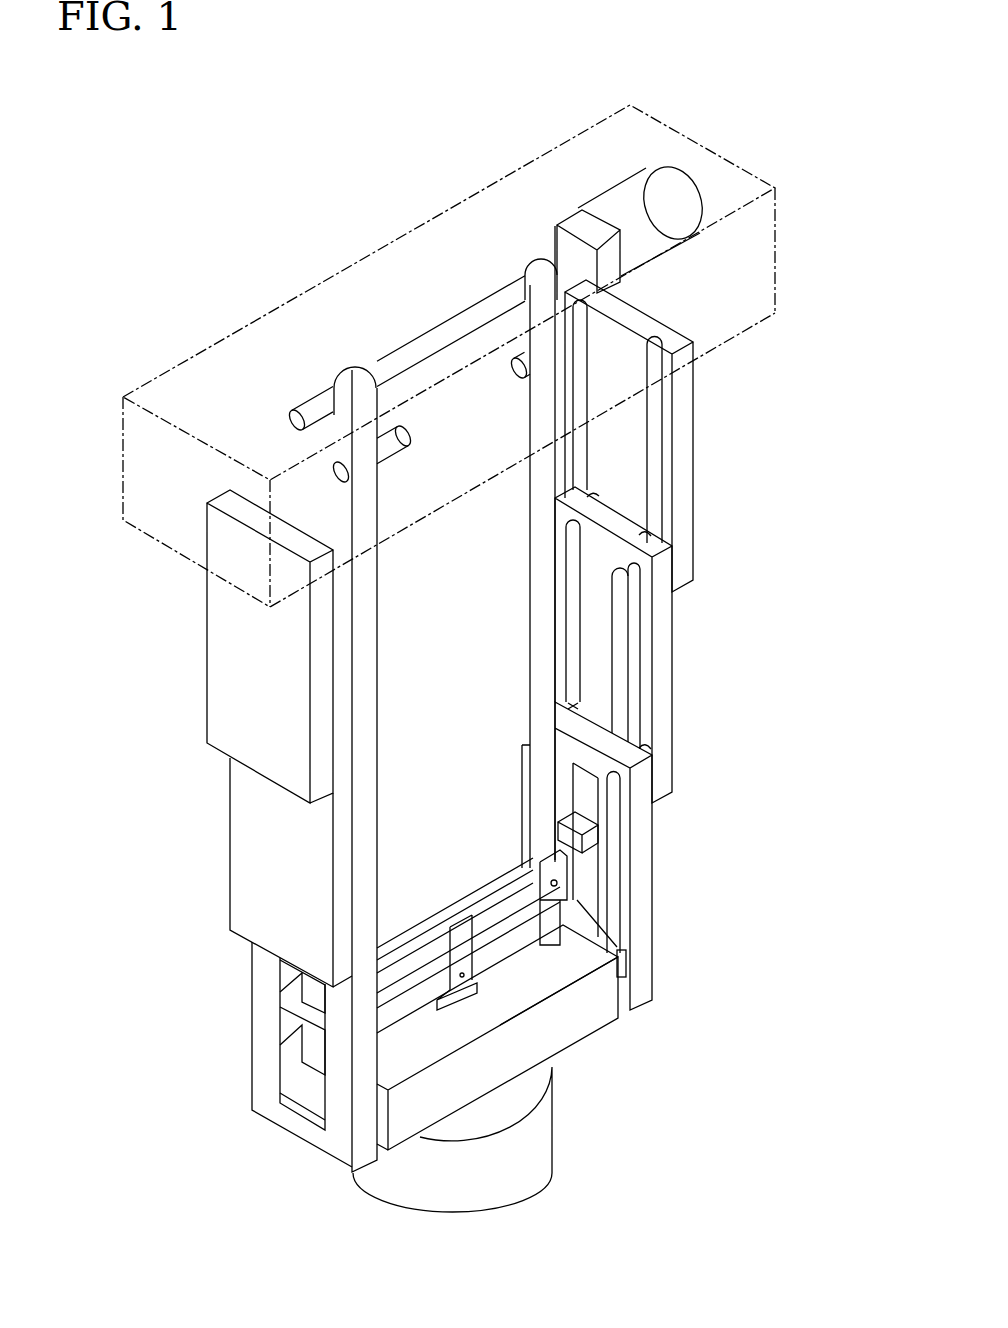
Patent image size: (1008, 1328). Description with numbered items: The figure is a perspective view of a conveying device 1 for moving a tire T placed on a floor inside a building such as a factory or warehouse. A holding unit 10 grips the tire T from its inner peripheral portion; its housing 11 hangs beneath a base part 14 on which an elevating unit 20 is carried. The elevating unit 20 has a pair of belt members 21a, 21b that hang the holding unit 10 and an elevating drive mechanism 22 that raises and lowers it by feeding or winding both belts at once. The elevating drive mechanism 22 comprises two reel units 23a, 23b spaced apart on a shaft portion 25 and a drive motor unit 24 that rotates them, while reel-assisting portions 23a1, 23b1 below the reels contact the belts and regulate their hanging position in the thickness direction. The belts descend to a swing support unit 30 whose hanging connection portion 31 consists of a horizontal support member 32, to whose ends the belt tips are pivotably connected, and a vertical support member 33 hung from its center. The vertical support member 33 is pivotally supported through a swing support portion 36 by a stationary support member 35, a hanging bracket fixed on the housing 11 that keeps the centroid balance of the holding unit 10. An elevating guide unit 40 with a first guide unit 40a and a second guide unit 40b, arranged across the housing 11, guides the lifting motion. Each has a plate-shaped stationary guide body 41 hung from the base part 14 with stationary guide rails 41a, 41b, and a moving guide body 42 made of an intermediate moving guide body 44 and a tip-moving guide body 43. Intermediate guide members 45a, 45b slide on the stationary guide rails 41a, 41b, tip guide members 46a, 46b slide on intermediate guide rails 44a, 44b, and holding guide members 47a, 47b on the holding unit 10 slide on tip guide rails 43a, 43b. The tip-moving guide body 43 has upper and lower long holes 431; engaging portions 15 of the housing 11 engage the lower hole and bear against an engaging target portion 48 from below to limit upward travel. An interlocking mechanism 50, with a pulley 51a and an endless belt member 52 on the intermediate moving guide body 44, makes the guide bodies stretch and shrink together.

The conveying device 1 is at (233, 200).
The holding unit 10 is at (619, 1024).
The housing 11 is at (575, 1020).
The base part 14 is at (762, 258).
The engaging portion 15 is at (592, 918).
The elevating unit 20 is at (374, 228).
The belt member 21a is at (366, 576).
The belt member 21b is at (543, 503).
The elevating drive mechanism 22 is at (502, 196).
The reel unit 23a is at (330, 385).
The reel-assisting portion 23a1 is at (338, 470).
The reel unit 23b is at (528, 290).
The reel-assisting portion 23b1 is at (518, 372).
The drive motor unit 24 is at (628, 200).
The shaft portion 25 is at (422, 345).
The swing support unit 30 is at (460, 812).
The hanging connection portion 31 is at (480, 857).
The horizontal support member 32 is at (458, 936).
The vertical support member 33 is at (408, 932).
The stationary support member 35 is at (530, 1125).
The swing support portion 36 is at (418, 1000).
The elevating guide unit 40 is at (471, 735).
The first guide unit 40a is at (712, 585).
The second guide unit 40b is at (163, 737).
The stationary guide body 41 is at (690, 503).
The stationary guide rail 41a is at (590, 398).
The stationary guide rail 41b is at (652, 445).
The moving guide body 42 is at (463, 838).
The tip-moving guide body 43 is at (641, 875).
The tip guide rail 43a is at (524, 748).
The tip guide rail 43b is at (622, 806).
The rectangular long hole 431 is at (295, 977).
The intermediate moving guide body 44 is at (665, 690).
The intermediate guide rail 44a is at (558, 622).
The intermediate guide rail 44b is at (580, 592).
The intermediate guide member 45a is at (595, 497).
The intermediate guide member 45b is at (650, 538).
The tip guide member 46a is at (568, 700).
The tip guide member 46b is at (652, 748).
The holding guide member 47a is at (532, 910).
The holding guide member 47b is at (628, 966).
The engaging target portion 48 is at (600, 832).
The interlocking mechanism 50 is at (773, 630).
The pulley 51a is at (632, 572).
The endless belt member 52 is at (622, 620).
The tire T is at (410, 1183).